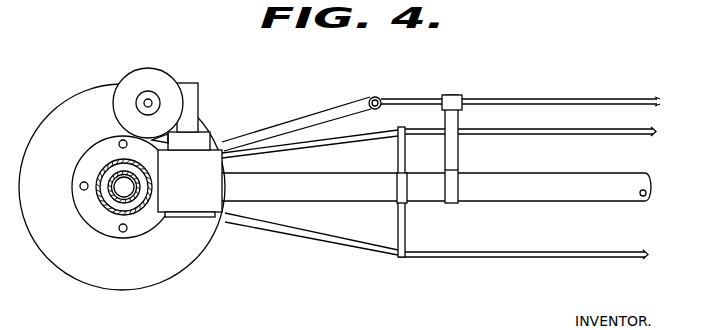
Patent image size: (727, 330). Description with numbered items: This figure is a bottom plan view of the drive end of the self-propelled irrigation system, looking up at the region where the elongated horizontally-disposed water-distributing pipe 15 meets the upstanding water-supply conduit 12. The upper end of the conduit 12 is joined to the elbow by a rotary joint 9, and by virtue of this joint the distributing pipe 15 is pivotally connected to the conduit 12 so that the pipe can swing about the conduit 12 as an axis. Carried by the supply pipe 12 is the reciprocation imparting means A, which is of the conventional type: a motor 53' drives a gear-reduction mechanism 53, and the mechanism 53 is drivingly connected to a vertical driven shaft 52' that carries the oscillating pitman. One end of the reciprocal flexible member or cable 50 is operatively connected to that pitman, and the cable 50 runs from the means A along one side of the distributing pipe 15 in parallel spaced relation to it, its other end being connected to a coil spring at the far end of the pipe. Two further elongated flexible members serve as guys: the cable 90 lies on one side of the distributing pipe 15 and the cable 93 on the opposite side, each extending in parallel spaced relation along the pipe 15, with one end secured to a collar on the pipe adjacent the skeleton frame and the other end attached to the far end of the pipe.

The rotary joint 9 is at (106, 210).
The water-supply conduit 12 is at (133, 197).
The water-distributing pipe 15 is at (527, 200).
The reciprocal flexible member or cable 50 is at (530, 99).
The vertical driven shaft 52' is at (183, 91).
The gear-reduction mechanism 53 is at (148, 88).
The motor 53' is at (215, 157).
The elongated flexible member or cable 90 is at (553, 135).
The elongated flexible member or cable 93 is at (535, 257).
The reciprocation imparting means A is at (214, 122).